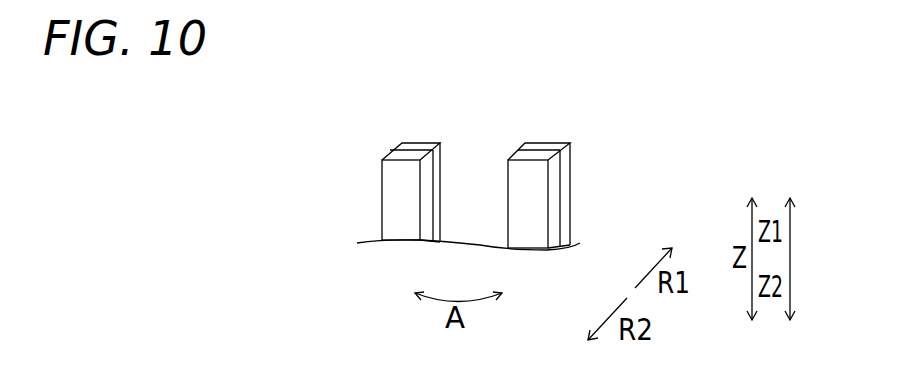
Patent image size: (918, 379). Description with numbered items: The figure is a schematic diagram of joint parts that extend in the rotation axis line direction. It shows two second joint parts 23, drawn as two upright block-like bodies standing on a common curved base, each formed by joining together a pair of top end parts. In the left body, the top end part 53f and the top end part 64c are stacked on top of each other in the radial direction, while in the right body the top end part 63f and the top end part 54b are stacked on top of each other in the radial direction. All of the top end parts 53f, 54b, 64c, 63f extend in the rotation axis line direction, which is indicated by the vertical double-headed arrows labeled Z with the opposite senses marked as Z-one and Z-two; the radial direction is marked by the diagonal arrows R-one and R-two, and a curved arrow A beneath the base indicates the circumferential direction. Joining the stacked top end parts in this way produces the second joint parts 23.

The second joint part 23 is at (476, 163).
The top end part 64c is at (382, 160).
The top end part 53f is at (430, 142).
The top end part 54b is at (512, 158).
The top end part 63f is at (552, 142).